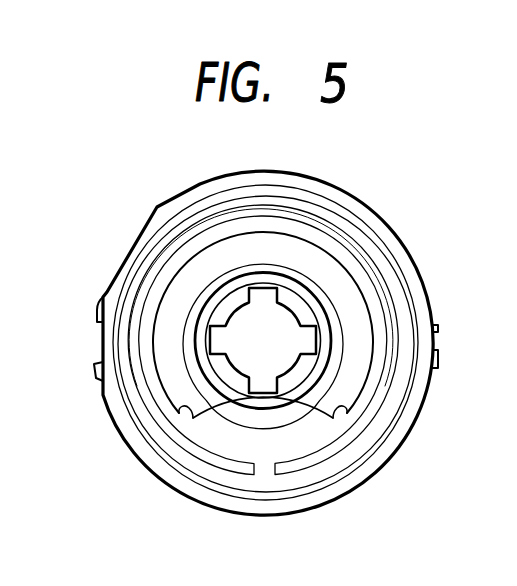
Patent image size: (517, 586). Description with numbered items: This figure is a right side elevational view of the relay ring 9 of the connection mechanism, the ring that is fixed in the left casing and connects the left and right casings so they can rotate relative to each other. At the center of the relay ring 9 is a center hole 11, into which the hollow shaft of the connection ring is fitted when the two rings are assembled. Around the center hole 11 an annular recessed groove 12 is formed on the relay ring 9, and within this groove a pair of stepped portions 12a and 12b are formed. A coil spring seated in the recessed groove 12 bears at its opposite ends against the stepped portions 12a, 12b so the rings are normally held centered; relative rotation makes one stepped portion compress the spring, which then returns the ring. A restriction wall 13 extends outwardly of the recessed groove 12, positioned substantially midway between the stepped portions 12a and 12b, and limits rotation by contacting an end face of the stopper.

The relay ring 9 is at (388, 209).
The center hole 11 is at (288, 358).
The annular recessed groove 12 is at (353, 293).
The stepped portion 12a is at (180, 416).
The stepped portion 12b is at (346, 416).
The restriction wall 13 is at (265, 460).